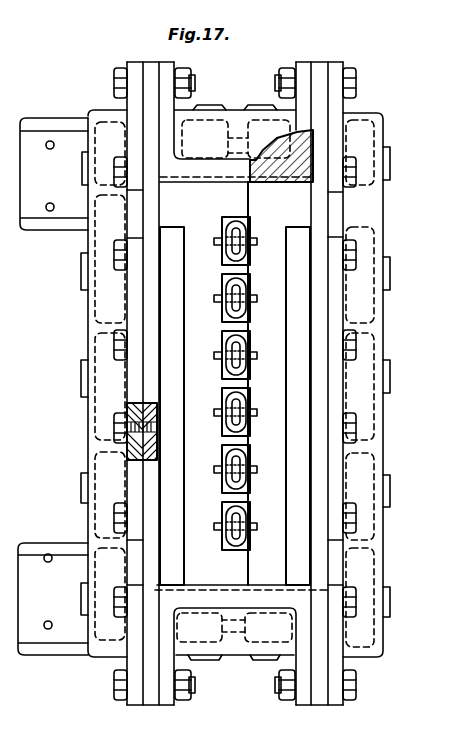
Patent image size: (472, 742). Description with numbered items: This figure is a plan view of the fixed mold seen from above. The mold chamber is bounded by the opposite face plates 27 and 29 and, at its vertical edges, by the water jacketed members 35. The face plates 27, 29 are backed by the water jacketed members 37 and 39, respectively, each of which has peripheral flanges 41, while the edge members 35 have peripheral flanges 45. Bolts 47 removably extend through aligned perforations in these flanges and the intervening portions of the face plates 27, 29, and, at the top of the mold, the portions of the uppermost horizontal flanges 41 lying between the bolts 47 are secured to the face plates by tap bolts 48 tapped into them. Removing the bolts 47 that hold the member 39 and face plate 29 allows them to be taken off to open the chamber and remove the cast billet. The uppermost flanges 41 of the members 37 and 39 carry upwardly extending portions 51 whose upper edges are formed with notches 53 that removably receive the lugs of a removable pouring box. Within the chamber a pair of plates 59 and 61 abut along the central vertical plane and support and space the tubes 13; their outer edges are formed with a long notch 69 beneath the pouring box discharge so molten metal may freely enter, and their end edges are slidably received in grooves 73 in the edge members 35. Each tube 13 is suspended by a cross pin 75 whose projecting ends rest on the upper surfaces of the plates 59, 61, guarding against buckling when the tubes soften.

The tube 13 is at (243, 288).
The face plate 27 is at (150, 316).
The face plate 29 is at (316, 313).
The water jacketed member 35 is at (190, 110).
The water jacketed member 37 is at (90, 252).
The water jacketed member 39 is at (372, 113).
The peripheral flange 41 is at (134, 65).
The peripheral flange 45 is at (170, 65).
The bolt 47 is at (114, 83).
The tap bolt 48 is at (115, 168).
The upwardly extending portion 51 is at (137, 211).
The notch 53 is at (153, 222).
The plate 59 is at (192, 483).
The plate 61 is at (273, 465).
The long notch 69 is at (183, 356).
The groove 73 is at (289, 172).
The cross pin 75 is at (218, 300).